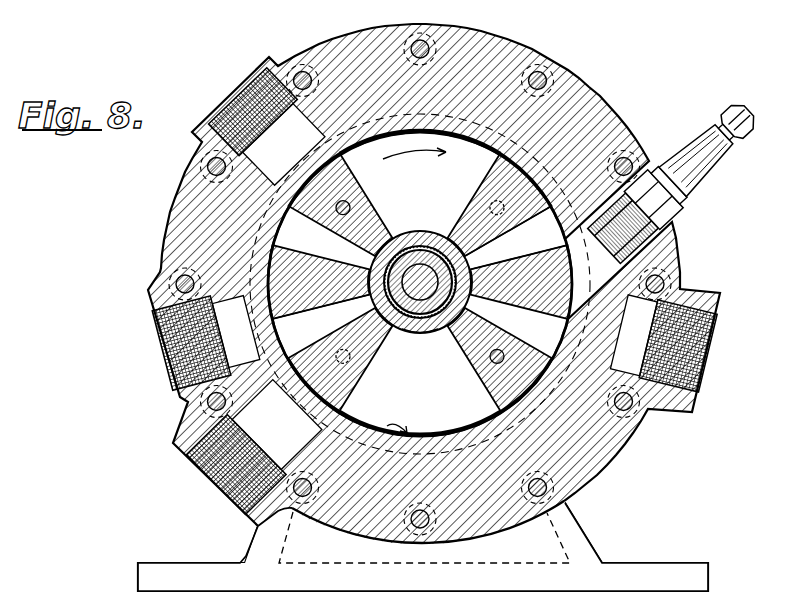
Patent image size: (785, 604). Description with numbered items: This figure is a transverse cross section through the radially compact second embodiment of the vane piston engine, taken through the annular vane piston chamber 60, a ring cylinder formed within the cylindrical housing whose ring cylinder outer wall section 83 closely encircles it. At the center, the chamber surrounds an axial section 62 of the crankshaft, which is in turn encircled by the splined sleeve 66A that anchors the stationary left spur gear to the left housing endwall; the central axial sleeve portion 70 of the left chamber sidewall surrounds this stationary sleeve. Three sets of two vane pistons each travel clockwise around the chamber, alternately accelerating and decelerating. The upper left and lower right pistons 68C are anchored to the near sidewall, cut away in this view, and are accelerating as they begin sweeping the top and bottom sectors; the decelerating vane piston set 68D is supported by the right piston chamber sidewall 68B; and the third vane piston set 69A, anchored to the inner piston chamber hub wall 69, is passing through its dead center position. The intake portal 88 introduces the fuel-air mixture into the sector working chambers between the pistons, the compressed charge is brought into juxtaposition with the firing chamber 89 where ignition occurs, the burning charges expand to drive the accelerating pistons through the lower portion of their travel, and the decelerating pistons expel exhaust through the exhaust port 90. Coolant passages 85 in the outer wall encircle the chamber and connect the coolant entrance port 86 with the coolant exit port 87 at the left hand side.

The annular vane piston chamber 60 is at (403, 347).
The axial section of the crankshaft assembly 62 is at (416, 270).
The splined sleeve 66A is at (418, 312).
The right piston chamber sidewall 68B is at (427, 405).
The vane pistons 68C is at (362, 185).
The vane pistons 68D is at (478, 185).
The inner piston chamber hub wall 69 is at (420, 284).
The third vane piston set 69A is at (420, 282).
The central axial sleeve portion 70 is at (470, 265).
The ring cylinder outer wall section 83 is at (500, 37).
The coolant passages 85 is at (613, 453).
The coolant entrance port 86 is at (694, 392).
The coolant exit port 87 is at (208, 474).
The intake portal 88 is at (246, 88).
The firing chamber 89 is at (603, 254).
The exhaust port 90 is at (177, 373).